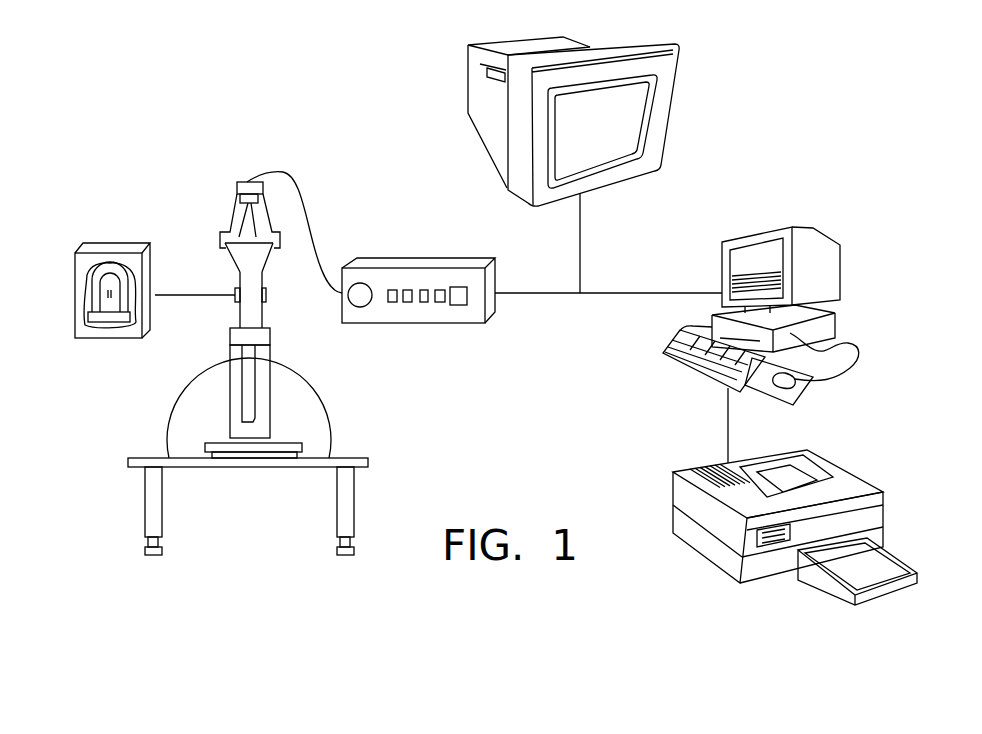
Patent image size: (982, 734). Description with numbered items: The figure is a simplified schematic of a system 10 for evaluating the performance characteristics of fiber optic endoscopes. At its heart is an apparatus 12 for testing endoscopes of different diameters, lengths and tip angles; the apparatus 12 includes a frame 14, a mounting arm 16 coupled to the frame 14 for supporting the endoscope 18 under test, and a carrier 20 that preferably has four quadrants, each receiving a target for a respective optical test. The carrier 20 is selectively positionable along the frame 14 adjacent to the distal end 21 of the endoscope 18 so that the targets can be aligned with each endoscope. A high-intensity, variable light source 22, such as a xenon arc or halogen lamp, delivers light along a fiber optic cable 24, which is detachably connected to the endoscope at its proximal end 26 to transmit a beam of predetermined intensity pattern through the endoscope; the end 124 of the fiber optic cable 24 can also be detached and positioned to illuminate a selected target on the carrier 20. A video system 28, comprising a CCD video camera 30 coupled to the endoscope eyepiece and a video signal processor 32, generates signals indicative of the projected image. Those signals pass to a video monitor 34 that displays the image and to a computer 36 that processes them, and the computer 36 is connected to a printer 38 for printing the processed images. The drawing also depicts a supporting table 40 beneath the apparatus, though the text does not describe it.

The system 10 is at (258, 117).
The apparatus 12 is at (153, 415).
The frame 14 is at (192, 380).
The mounting arm 16 is at (273, 383).
The endoscope 18 is at (258, 353).
The carrier 20 is at (283, 442).
The distal end 21 is at (245, 422).
The light source 22 is at (121, 247).
The fiber optic cable 24 is at (193, 293).
The proximal end 26 is at (262, 288).
The end of the fiber optic cable 124 is at (235, 300).
The video system 28 is at (365, 180).
The CCD video camera 30 is at (237, 190).
The video signal processor 32 is at (398, 263).
The video monitor 34 is at (517, 47).
The computer 36 is at (747, 240).
The printer 38 is at (810, 458).
The table 40 is at (142, 457).